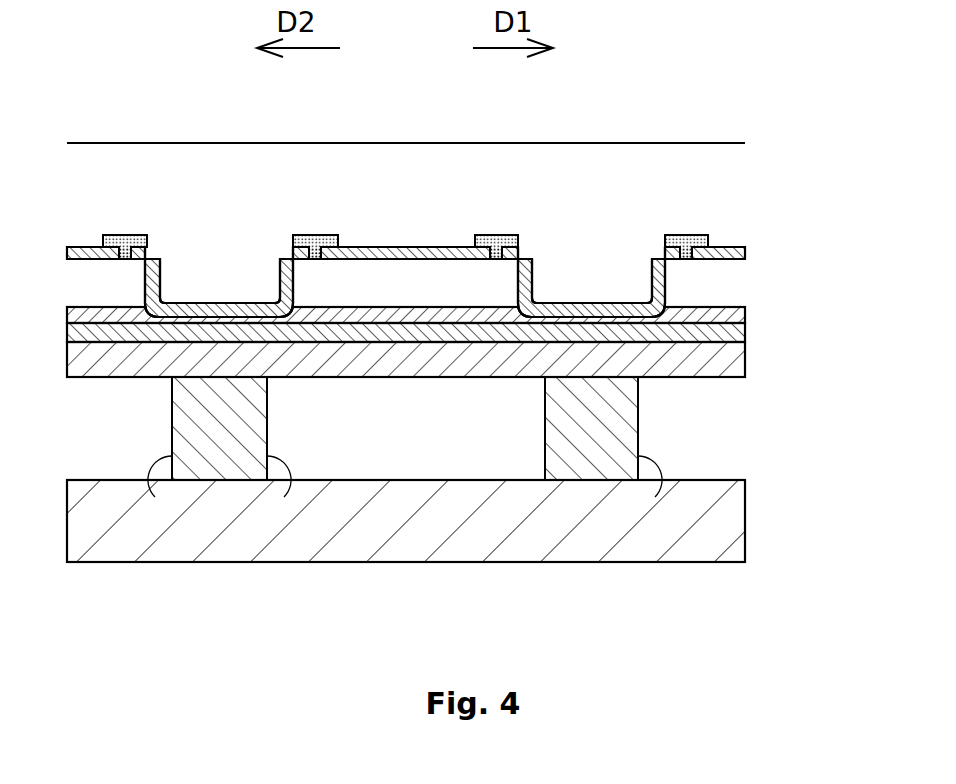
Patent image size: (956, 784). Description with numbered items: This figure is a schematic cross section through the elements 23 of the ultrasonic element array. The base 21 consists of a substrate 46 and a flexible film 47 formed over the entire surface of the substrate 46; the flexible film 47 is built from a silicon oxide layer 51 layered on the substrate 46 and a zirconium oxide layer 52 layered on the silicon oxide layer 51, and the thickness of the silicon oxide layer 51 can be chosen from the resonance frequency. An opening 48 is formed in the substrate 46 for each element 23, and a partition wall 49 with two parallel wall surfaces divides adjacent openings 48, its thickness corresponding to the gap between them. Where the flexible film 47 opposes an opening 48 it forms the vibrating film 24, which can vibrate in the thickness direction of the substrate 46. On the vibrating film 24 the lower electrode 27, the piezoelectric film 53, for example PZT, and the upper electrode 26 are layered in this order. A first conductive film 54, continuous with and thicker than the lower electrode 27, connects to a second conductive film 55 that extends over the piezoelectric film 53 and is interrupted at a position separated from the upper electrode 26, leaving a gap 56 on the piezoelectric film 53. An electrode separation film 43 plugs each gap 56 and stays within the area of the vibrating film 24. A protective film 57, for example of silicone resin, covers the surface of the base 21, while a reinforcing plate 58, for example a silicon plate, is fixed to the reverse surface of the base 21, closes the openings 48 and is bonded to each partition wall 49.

The base 21 is at (737, 312).
The element 23 is at (88, 182).
The vibrating film 24 is at (138, 372).
The upper electrode 26 is at (80, 246).
The lower electrode 27 is at (97, 320).
The electrode separation film 43 is at (119, 233).
The substrate 46 is at (592, 480).
The flexible film 47 is at (466, 337).
The opening 48 is at (405, 495).
The partition wall 49 is at (262, 433).
The silicon oxide layer 51 is at (741, 362).
The zirconium oxide layer 52 is at (437, 324).
The piezoelectric film 53 is at (423, 272).
The first conductive film 54 is at (277, 299).
The second conductive film 55 is at (281, 272).
The gap 56 is at (128, 235).
The protective film 57 is at (615, 157).
The reinforcing plate 58 is at (435, 562).